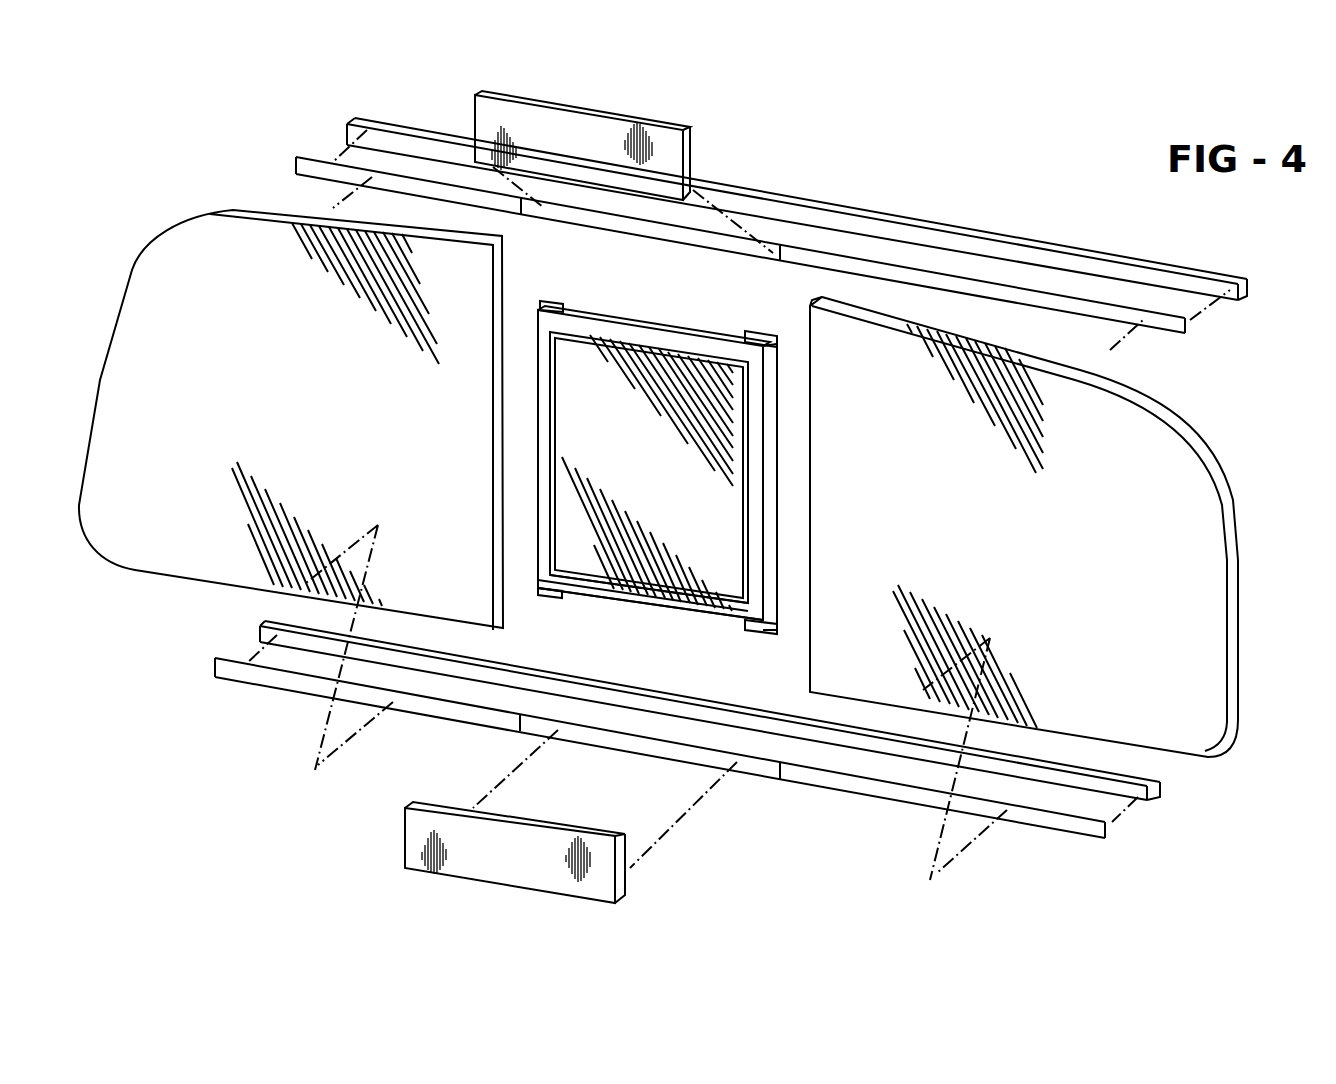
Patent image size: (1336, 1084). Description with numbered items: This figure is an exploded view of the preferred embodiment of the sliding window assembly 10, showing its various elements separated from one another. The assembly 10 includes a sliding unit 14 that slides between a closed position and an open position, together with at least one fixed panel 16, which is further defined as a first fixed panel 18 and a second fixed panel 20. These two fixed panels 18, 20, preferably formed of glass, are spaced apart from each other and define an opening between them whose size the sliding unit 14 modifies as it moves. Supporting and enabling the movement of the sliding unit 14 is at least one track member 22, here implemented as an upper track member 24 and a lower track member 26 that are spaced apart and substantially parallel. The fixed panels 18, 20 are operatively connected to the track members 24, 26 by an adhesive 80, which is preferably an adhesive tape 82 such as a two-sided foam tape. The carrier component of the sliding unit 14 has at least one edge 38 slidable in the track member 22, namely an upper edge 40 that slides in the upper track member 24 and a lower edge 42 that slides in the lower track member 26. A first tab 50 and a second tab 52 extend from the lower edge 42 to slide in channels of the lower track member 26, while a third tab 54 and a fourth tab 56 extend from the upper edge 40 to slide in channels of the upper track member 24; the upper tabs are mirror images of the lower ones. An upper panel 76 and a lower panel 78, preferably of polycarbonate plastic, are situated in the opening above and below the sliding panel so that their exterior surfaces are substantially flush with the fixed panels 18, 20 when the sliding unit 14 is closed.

The assembly 10 is at (955, 190).
The sliding unit 14 is at (660, 313).
The fixed panel 16 is at (128, 270).
The first fixed panel 18 is at (312, 437).
The second fixed panel 20 is at (1017, 560).
The track member 22 is at (1236, 257).
The upper track member 24 is at (1138, 255).
The lower track member 26 is at (1070, 792).
The edge 38 is at (608, 305).
The upper edge 40 is at (711, 335).
The lower edge 42 is at (670, 612).
The first tab 50 is at (750, 630).
The second tab 52 is at (552, 594).
The third tab 54 is at (760, 327).
The fourth tab 56 is at (549, 300).
The upper panel 76 is at (650, 123).
The lower panel 78 is at (495, 863).
The adhesive 80 is at (1193, 347).
The adhesive tape 82 is at (296, 160).